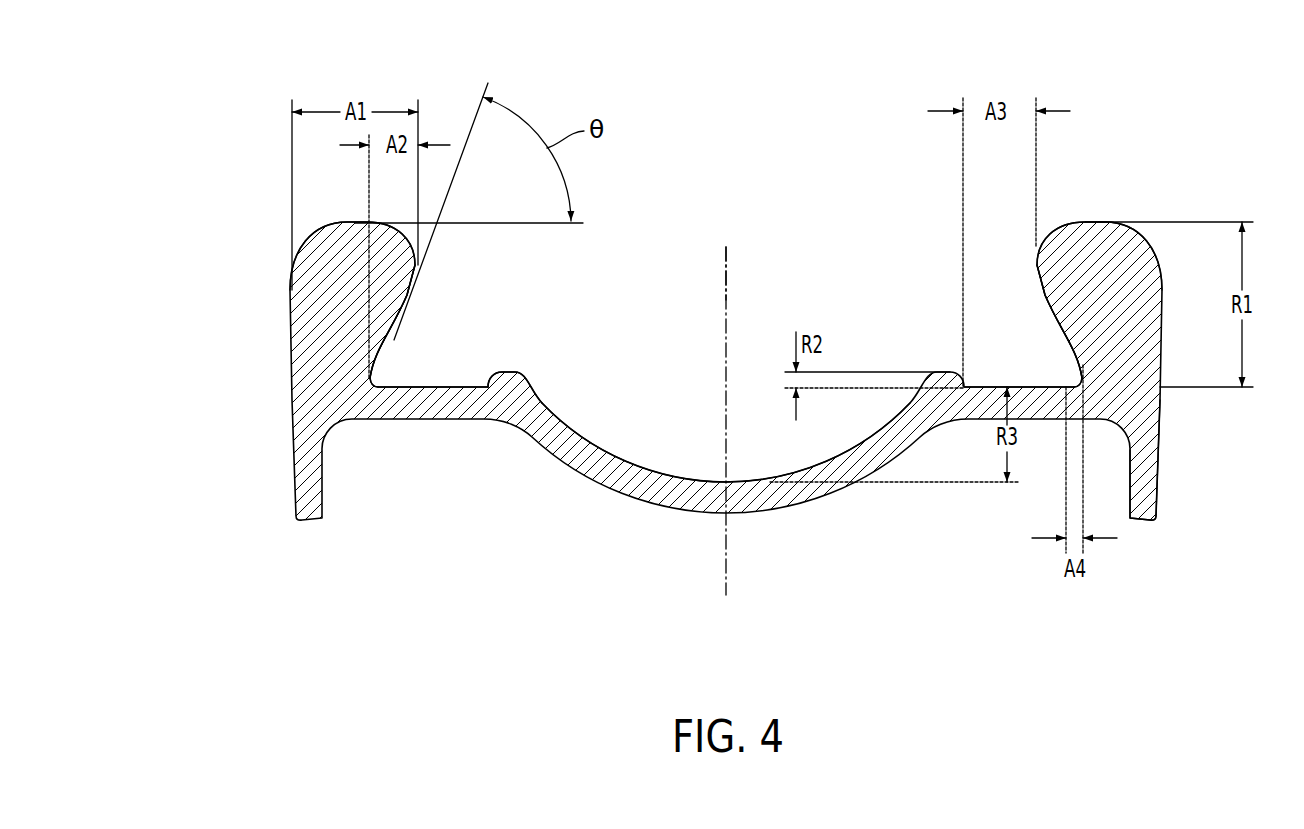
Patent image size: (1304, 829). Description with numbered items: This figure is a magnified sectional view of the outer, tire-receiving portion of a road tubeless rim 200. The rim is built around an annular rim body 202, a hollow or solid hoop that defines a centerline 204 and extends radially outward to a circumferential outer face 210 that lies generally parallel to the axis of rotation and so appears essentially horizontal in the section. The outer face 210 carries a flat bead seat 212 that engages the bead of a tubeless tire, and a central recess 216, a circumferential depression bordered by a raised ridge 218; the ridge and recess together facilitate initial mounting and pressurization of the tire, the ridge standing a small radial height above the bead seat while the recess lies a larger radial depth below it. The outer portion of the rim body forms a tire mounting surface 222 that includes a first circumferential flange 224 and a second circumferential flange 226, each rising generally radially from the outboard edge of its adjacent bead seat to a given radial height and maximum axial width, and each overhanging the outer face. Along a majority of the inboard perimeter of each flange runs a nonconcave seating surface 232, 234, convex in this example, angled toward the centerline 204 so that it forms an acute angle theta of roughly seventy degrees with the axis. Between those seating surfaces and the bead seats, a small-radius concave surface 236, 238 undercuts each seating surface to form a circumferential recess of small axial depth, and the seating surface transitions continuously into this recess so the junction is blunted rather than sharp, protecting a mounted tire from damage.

The road tubeless rim 200 is at (158, 116).
The annular rim body 202 is at (1157, 494).
The centerline 204 is at (730, 582).
The circumferential outer face 210 is at (912, 318).
The flat bead seat 212 is at (463, 380).
The central recess 216 is at (582, 426).
The ridge 218 is at (516, 370).
The tire mounting surface 222 is at (750, 127).
The first circumferential flange 224 is at (347, 315).
The second circumferential flange 226 is at (1123, 314).
The nonconcave seating surface 232 is at (418, 290).
The nonconcave seating surface 234 is at (1038, 292).
The concave surface 236 is at (380, 374).
The concave surface 238 is at (1079, 372).